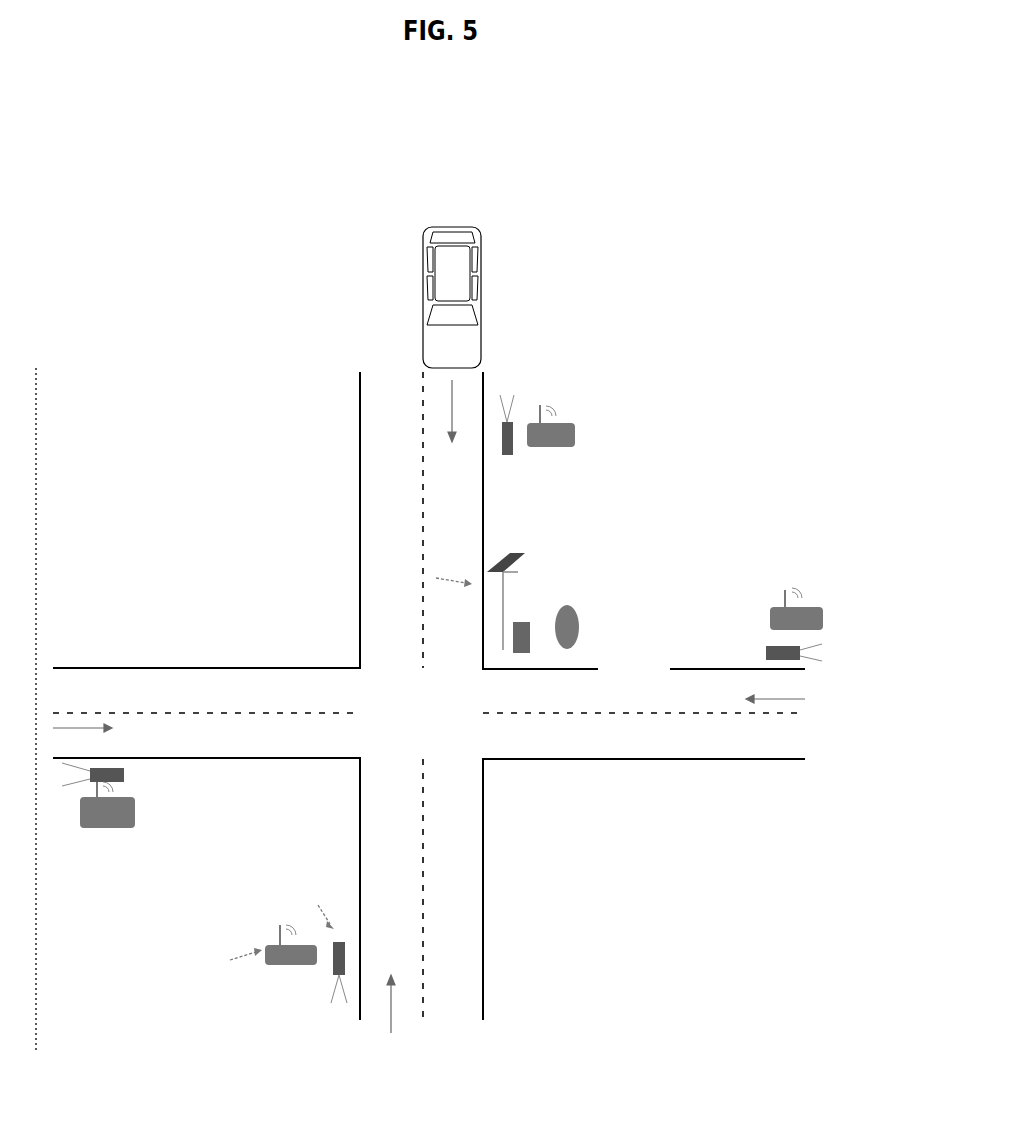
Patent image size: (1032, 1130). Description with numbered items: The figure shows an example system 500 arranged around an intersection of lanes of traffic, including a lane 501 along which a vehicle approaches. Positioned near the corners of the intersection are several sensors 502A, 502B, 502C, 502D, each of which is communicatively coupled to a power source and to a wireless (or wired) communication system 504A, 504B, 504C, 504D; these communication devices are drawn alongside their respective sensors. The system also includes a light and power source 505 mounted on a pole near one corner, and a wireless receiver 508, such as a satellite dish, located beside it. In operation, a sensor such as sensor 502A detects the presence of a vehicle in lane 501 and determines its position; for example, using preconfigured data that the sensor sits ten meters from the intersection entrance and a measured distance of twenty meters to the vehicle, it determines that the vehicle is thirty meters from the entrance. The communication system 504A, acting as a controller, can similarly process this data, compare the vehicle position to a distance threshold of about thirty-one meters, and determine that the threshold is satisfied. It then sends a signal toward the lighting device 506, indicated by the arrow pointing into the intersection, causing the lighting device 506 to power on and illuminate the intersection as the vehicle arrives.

The intersection environment 500 is at (150, 254).
The lane 501 is at (441, 470).
The sensor 502A is at (510, 398).
The sensor 502B is at (822, 660).
The sensor 502C is at (342, 978).
The sensor 502D is at (108, 768).
The wireless communication system 504A is at (570, 447).
The wireless communication system 504B is at (784, 590).
The wireless communication system 504C is at (267, 945).
The wireless communication system 504D is at (128, 815).
The light and power source 505 is at (578, 525).
The lighting device 506 is at (446, 572).
The wireless receiver 508 is at (560, 640).